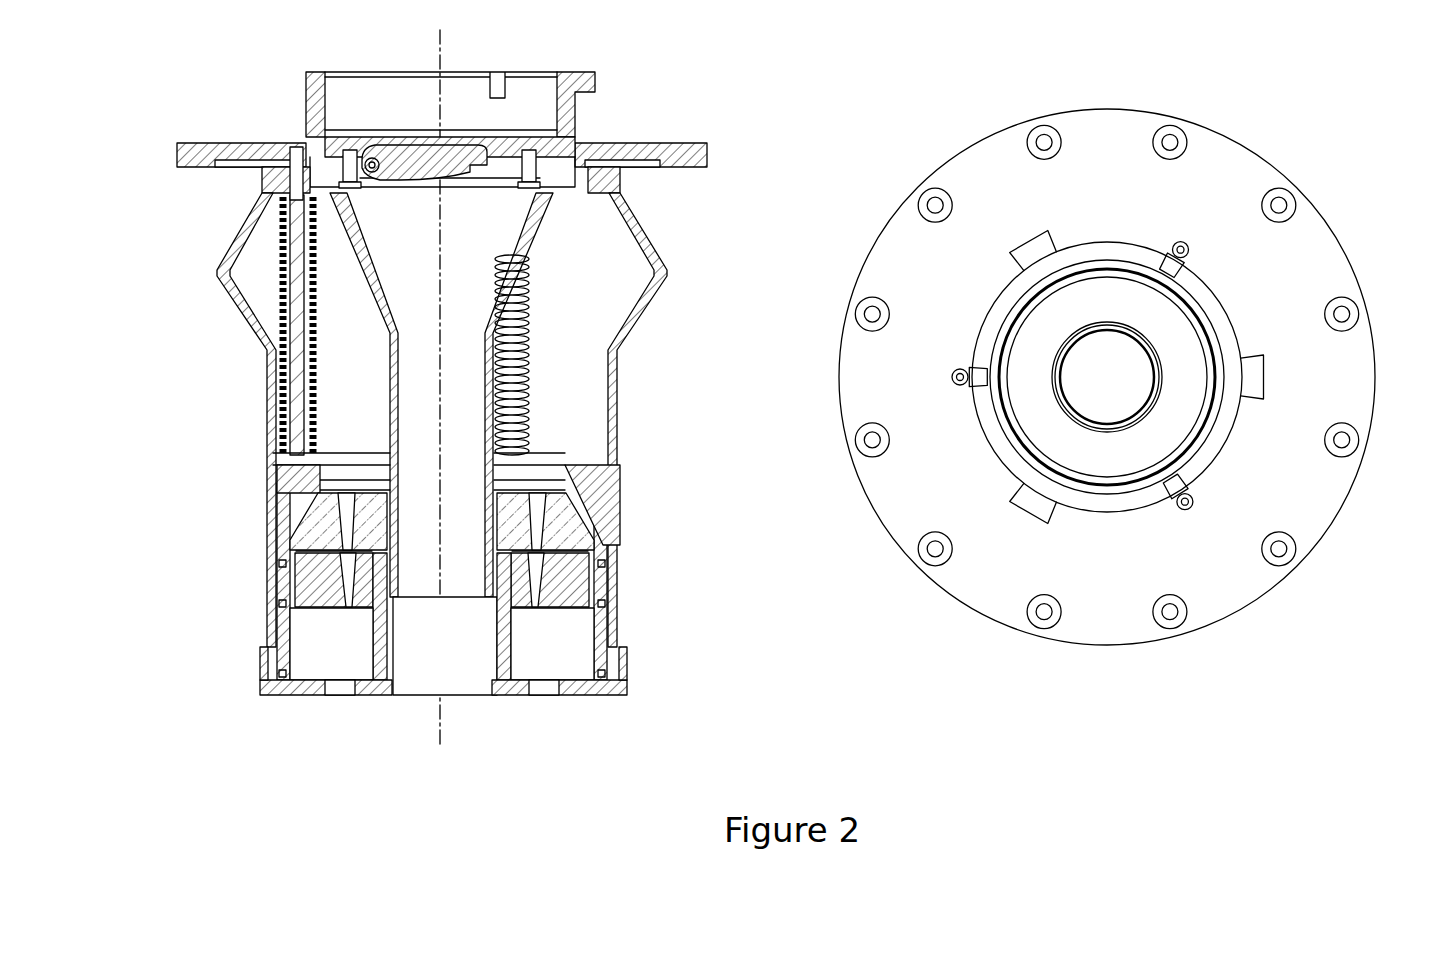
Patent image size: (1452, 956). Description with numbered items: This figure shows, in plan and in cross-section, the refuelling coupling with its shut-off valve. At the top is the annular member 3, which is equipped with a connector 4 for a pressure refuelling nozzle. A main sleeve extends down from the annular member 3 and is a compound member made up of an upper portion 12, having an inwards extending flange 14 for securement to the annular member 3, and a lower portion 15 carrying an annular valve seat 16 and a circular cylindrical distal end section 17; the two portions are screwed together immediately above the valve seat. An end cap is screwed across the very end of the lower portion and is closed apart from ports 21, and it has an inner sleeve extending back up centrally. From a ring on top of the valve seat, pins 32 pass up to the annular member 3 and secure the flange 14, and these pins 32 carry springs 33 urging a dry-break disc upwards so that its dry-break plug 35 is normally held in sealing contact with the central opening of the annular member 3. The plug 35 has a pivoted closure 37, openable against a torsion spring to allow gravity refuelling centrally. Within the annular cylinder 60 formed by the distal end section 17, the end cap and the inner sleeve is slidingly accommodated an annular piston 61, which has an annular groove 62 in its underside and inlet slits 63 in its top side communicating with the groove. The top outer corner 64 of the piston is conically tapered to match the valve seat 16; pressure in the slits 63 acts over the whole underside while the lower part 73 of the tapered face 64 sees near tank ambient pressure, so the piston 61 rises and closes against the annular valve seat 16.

The annular member 3 is at (597, 140).
The connector 4 is at (597, 73).
The upper portion 12 is at (625, 340).
The inwards extending flange 14 is at (637, 208).
The lower portion 15 is at (270, 600).
The annular valve seat 16 is at (605, 497).
The circular cylindrical distal end section 17 is at (614, 642).
The ports 21 is at (552, 688).
The pins 32 is at (297, 377).
The springs 33 is at (280, 278).
The dry-break plug 35 is at (513, 155).
The pivoted closure 37 is at (422, 152).
The annular cylinder 60 is at (278, 558).
The annular piston 61 is at (575, 594).
The annular groove 62 is at (570, 683).
The inlet slits 63 is at (352, 607).
The top outer corner 64 is at (608, 555).
The lower part of the tapered face 73 is at (612, 578).